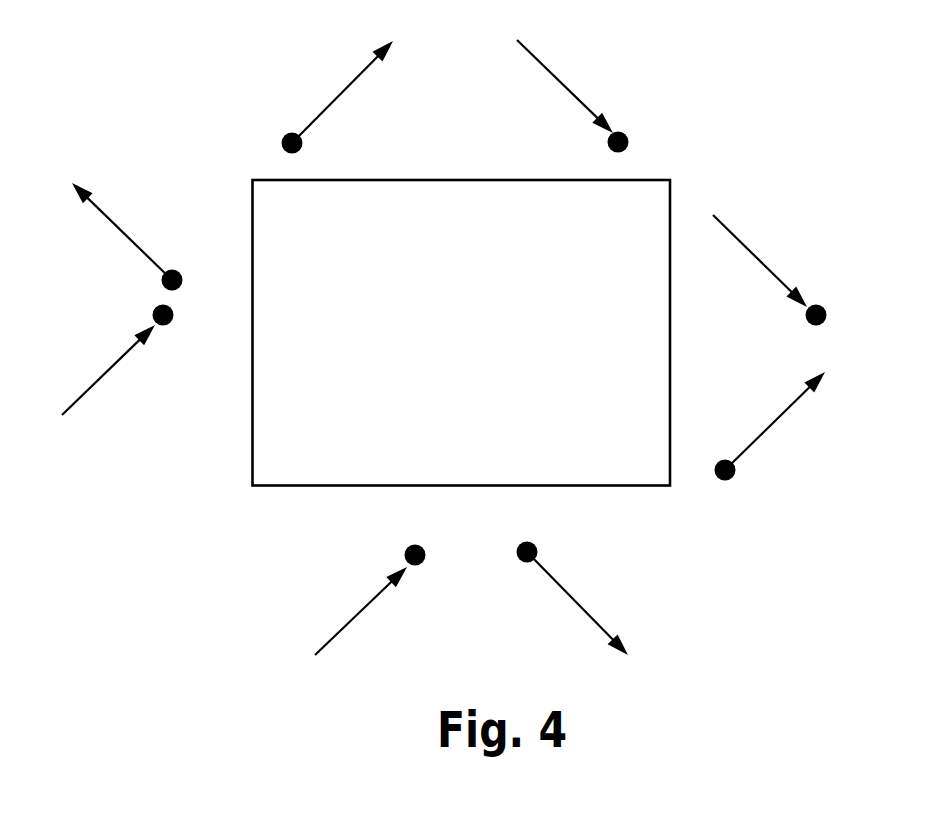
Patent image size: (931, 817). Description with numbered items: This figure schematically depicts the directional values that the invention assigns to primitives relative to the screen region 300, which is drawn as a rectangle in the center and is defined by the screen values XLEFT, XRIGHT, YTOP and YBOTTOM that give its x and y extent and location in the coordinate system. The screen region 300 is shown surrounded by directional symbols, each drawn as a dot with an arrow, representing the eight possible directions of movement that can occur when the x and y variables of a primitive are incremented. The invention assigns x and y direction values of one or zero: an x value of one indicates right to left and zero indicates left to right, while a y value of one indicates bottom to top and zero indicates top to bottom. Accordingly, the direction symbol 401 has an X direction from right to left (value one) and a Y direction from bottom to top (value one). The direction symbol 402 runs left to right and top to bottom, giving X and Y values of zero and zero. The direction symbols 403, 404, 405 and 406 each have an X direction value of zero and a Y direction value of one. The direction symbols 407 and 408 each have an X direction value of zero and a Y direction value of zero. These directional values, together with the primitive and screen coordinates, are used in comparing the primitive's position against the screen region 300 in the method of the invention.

The screen region 300 is at (462, 333).
The direction symbol 401 is at (126, 240).
The direction symbol 402 is at (760, 265).
The direction symbol 403 is at (757, 440).
The direction symbol 404 is at (88, 392).
The direction symbol 405 is at (323, 112).
The direction symbol 406 is at (355, 622).
The direction symbol 407 is at (562, 592).
The direction symbol 408 is at (557, 80).